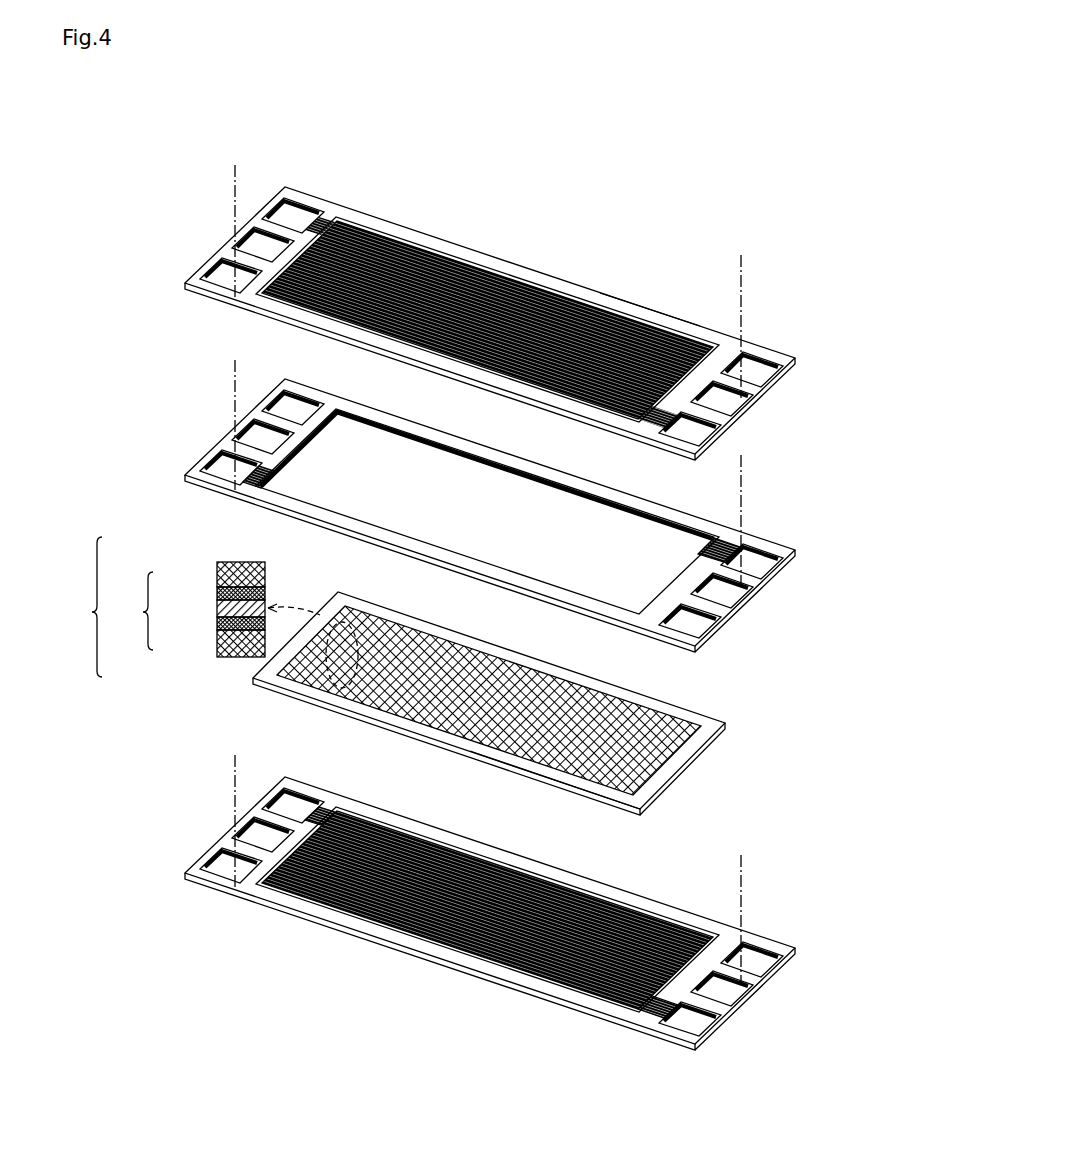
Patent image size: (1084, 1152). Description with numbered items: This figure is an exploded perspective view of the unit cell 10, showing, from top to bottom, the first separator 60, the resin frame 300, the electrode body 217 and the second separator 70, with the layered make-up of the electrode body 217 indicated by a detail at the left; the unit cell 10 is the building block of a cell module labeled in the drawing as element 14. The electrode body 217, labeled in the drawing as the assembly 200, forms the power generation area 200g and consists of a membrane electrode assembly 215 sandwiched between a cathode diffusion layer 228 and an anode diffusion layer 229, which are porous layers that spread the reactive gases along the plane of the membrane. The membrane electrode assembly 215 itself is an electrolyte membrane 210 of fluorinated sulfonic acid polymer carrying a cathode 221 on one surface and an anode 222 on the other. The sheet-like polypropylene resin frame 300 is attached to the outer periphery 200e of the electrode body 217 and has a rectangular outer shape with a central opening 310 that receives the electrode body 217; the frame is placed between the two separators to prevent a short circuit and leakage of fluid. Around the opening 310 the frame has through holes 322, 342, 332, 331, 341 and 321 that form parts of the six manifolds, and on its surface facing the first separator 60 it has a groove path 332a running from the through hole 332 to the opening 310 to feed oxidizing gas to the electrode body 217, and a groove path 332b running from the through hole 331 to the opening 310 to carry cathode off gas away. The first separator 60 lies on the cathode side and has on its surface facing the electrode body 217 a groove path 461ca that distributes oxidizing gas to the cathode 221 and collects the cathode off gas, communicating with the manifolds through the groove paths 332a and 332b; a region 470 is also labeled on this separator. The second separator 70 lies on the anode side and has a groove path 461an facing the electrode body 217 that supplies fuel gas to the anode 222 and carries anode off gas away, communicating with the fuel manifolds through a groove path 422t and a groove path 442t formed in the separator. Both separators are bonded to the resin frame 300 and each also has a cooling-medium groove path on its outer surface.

The unit cell 10 is at (830, 172).
The unit cell 14 is at (683, 182).
The first separator 60 is at (774, 322).
The second separator 70 is at (771, 905).
The resin frame 300 is at (771, 505).
The opening 310 is at (505, 505).
The membrane electrode assembly 200 is at (367, 598).
The outer periphery 200e is at (510, 653).
The power generation area 200g is at (657, 768).
The electrode body 217 is at (75, 607).
The membrane electrode assembly 215 is at (126, 611).
The cathode diffusion layer 228 is at (217, 568).
The cathode 221 is at (217, 594).
The electrolyte membrane 210 is at (217, 609).
The anode 222 is at (217, 625).
The anode diffusion layer 229 is at (217, 650).
The separator plate edge 470 is at (628, 307).
The groove path 461ca is at (498, 382).
The groove path 461an is at (480, 854).
The groove path 442t is at (318, 806).
The groove path 422t is at (648, 1018).
The through hole 342 is at (288, 400).
The through hole 321 is at (262, 428).
The through hole 332 is at (232, 455).
The groove path 332a is at (250, 482).
The groove path 332b is at (707, 545).
The through hole 331 is at (757, 563).
The through hole 341 is at (725, 595).
The through hole 322 is at (700, 618).